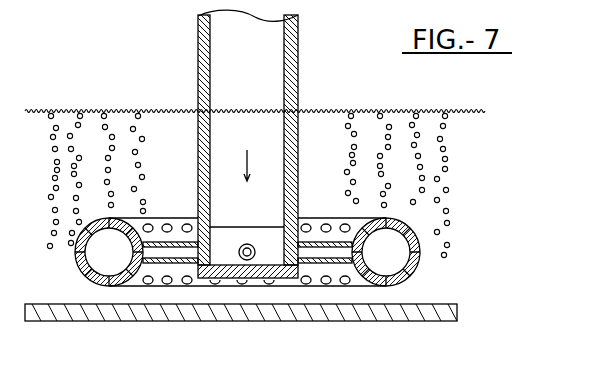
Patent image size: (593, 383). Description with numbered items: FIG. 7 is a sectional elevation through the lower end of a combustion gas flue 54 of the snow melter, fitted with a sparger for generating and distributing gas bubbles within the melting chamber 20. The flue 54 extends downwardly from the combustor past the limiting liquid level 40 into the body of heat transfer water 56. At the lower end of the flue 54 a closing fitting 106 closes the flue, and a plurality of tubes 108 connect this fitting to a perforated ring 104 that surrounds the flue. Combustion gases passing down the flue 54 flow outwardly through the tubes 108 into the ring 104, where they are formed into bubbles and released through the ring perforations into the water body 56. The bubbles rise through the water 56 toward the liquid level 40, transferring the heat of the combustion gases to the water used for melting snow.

The melting chamber 20 is at (427, 309).
The limiting liquid level 40 is at (118, 110).
The flue 54 is at (290, 59).
The heat transfer water body 56 is at (378, 173).
The perforated ring 104 is at (78, 243).
The closing fitting 106 is at (197, 222).
The tubes 108 is at (308, 243).